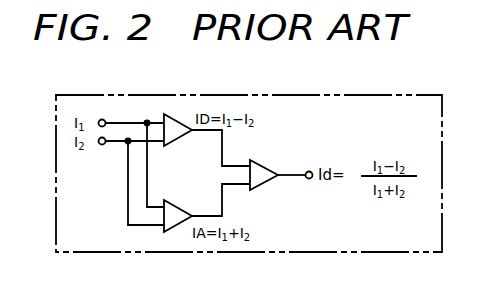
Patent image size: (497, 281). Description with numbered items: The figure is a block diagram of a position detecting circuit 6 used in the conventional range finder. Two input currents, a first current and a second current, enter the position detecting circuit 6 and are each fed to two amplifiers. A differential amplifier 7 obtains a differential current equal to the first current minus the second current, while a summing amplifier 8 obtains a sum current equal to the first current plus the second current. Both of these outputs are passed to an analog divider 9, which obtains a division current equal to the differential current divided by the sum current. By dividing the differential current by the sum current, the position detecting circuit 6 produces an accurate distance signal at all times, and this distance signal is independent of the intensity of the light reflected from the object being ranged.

The position detecting circuit 6 is at (310, 95).
The differential amplifier 7 is at (173, 142).
The summing amplifier 8 is at (172, 199).
The analog divider 9 is at (265, 160).